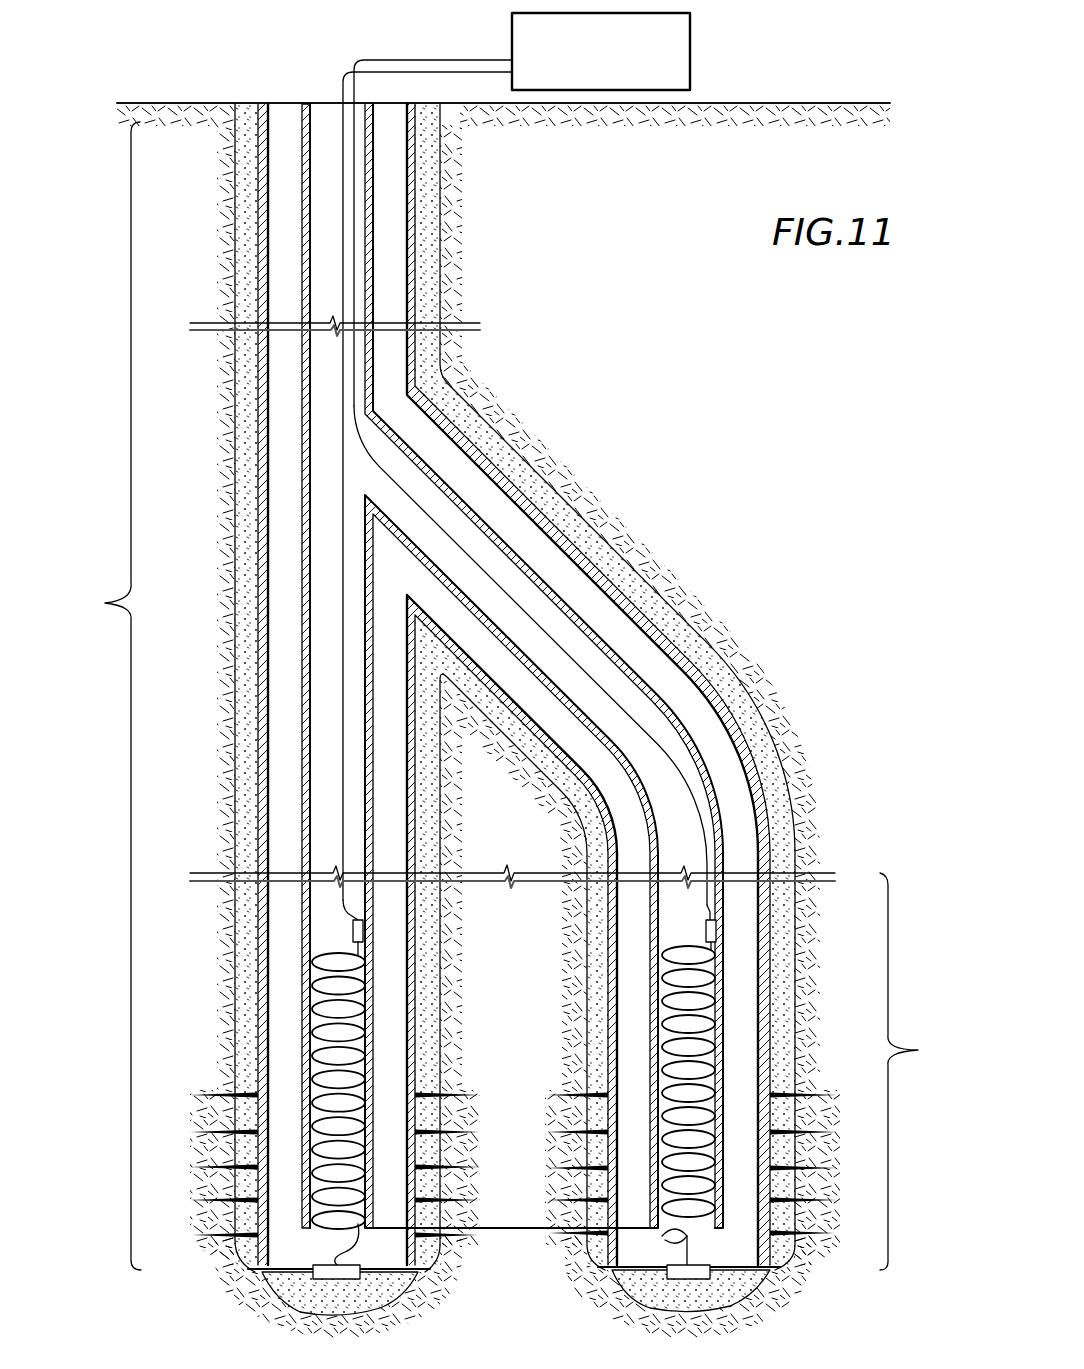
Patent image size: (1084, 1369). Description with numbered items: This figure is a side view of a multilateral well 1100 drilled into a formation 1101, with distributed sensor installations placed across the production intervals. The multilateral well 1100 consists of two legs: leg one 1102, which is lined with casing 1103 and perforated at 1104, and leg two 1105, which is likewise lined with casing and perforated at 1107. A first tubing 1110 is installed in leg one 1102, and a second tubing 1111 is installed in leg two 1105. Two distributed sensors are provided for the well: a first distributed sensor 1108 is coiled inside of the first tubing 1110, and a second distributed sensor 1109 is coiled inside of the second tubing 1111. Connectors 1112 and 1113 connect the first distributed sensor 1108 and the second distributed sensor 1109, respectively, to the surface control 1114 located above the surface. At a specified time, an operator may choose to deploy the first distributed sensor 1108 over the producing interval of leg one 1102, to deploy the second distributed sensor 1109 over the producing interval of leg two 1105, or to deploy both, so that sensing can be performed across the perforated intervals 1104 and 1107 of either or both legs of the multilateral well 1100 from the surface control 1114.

The multilateral well 1100 is at (257, 60).
The formation 1101 is at (536, 1319).
The leg one 1102 is at (98, 696).
The casing 1103 is at (263, 715).
The perforations 1104 is at (236, 1096).
The leg two 1105 is at (916, 1071).
The perforations 1107 is at (815, 1235).
The first distributed sensor 1108 is at (340, 756).
The second distributed sensor 1109 is at (663, 753).
The first tubing 1110 is at (370, 991).
The second tubing 1111 is at (720, 900).
The connector 1112 is at (363, 932).
The connector 1113 is at (717, 937).
The surface controls 1114 is at (692, 40).